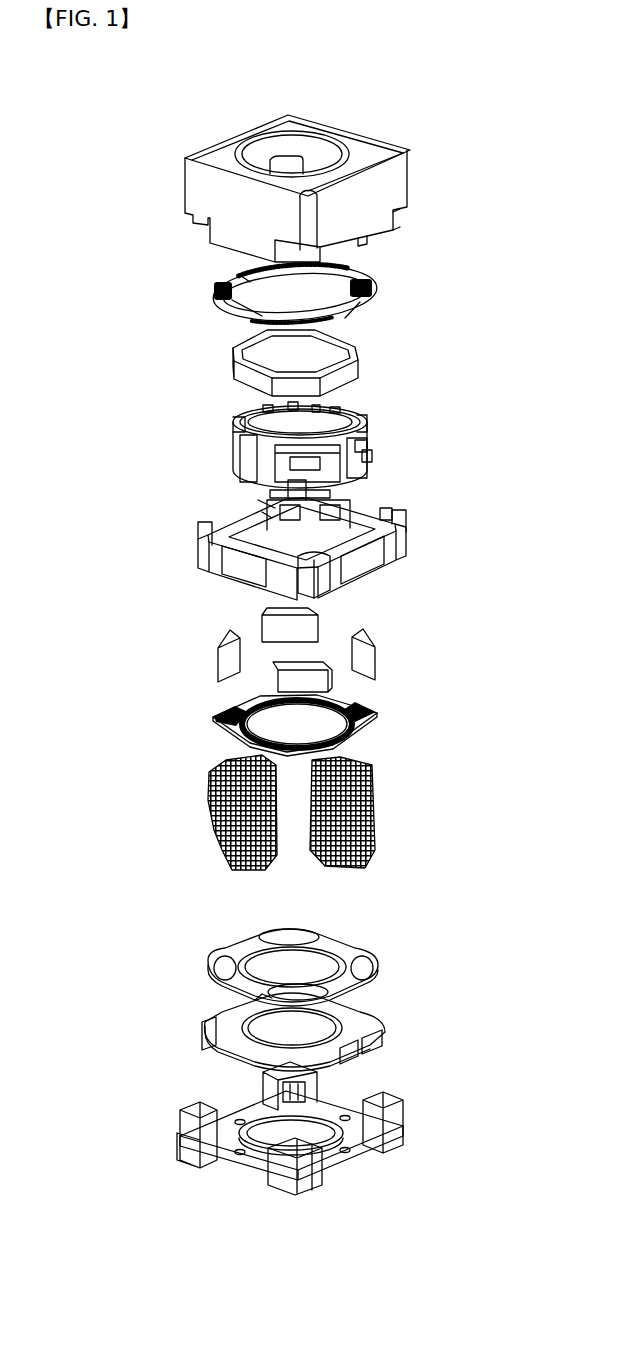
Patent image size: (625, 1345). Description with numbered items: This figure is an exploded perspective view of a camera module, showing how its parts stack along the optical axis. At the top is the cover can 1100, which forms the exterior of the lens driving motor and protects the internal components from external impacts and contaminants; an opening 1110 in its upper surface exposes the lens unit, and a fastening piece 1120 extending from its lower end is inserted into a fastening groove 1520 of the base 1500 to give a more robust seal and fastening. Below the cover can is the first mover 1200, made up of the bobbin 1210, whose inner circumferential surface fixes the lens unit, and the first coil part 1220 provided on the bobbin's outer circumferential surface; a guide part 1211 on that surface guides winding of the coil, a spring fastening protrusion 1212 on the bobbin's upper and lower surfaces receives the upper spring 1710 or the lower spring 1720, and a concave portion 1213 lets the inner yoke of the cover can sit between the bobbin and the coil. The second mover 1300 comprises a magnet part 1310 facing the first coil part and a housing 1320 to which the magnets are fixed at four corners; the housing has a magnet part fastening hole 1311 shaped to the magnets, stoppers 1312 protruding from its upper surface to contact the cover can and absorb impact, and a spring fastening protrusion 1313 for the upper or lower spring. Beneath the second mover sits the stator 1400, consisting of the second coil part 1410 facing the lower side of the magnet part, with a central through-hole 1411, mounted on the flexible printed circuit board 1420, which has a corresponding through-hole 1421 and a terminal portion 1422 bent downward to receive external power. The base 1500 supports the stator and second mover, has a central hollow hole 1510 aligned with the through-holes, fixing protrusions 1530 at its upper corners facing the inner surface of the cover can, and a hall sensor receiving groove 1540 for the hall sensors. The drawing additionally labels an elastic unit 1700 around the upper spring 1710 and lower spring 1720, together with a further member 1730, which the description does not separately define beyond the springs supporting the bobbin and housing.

The cover can 1100 is at (195, 142).
The opening 1110 is at (312, 150).
The fastening piece 1120 is at (395, 232).
The first mover 1200 is at (271, 414).
The bobbin 1210 is at (243, 450).
The guide part 1211 is at (370, 455).
The spring fastening protrusion 1212 is at (315, 405).
The concave portion 1213 is at (362, 440).
The first coil part 1220 is at (240, 355).
The second mover 1300 is at (270, 583).
The magnet part 1310 is at (255, 650).
The magnet part fastening hole 1311 is at (265, 505).
The stopper 1312 is at (388, 513).
The spring fastening protrusion 1313 is at (365, 560).
The housing 1320 is at (205, 547).
The stator 1400 is at (267, 998).
The second coil part 1410 is at (215, 968).
The through-hole 1411 is at (330, 963).
The flexible printed circuit board 1420 is at (205, 1033).
The through-hole 1421 is at (330, 1027).
The terminal portion 1422 is at (380, 1046).
The base 1500 is at (258, 1136).
The hollow hole 1510 is at (262, 1135).
The fastening groove 1520 is at (370, 1165).
The fixing protrusion 1530 is at (280, 1160).
The hall sensor receiving groove 1540 is at (385, 1118).
The elastic member unit 1700 is at (255, 562).
The upper spring 1710 is at (214, 296).
The lower spring 1720 is at (377, 715).
The circuit board / damper assembly 1730 is at (372, 806).